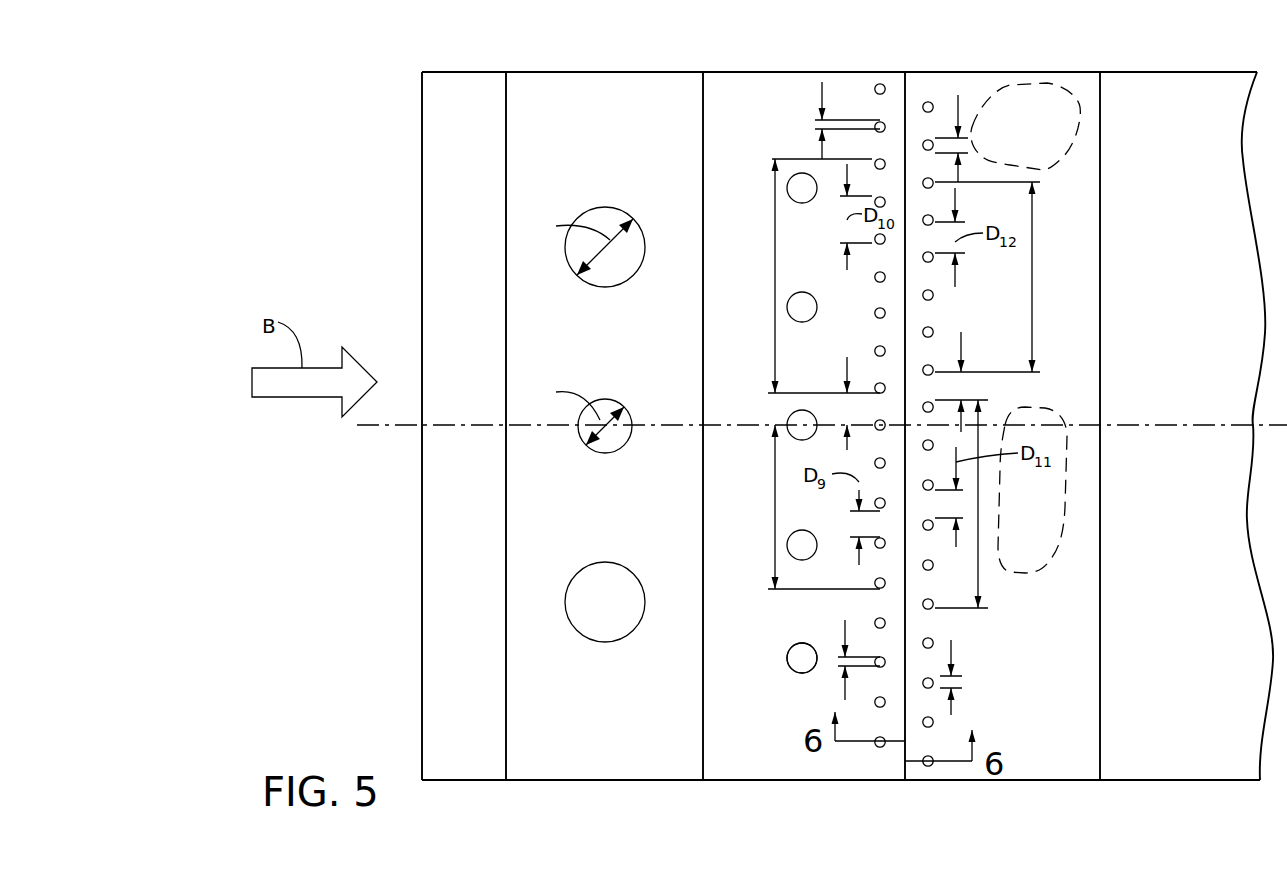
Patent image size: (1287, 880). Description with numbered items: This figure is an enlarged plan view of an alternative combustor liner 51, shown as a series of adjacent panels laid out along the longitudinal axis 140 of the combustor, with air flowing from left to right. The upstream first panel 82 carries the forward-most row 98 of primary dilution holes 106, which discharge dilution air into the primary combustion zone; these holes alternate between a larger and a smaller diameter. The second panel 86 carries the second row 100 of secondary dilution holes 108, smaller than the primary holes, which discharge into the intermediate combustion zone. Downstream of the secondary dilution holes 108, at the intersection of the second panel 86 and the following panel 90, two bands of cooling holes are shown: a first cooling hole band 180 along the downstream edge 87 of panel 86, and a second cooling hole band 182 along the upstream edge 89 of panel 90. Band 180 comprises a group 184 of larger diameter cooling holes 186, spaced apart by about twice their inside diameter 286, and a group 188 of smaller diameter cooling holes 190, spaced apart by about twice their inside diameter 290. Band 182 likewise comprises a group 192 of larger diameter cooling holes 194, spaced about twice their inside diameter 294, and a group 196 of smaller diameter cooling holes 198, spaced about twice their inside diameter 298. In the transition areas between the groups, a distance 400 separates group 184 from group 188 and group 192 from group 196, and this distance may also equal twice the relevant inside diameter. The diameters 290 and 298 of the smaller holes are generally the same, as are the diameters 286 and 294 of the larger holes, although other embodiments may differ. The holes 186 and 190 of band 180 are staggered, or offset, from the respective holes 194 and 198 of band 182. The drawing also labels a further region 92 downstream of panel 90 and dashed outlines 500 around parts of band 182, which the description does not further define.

The combustor liner 51 is at (372, 68).
The forward-most row 98 is at (538, 94).
The second row 100 is at (726, 129).
The downstream chamber 92 is at (1211, 426).
The first panel 82 is at (581, 780).
The second panel 86 is at (775, 780).
The panel 90 is at (985, 780).
The primary dilution holes 106 is at (633, 630).
The secondary dilution holes 108 is at (791, 672).
The longitudinal axis 140 is at (1128, 425).
The first cooling hole band 180 is at (830, 72).
The second cooling hole band 182 is at (940, 88).
The group of larger diameter cooling holes 184 is at (775, 505).
The larger diameter cooling holes 186 is at (883, 127).
The group of smaller diameter cooling holes 188 is at (775, 275).
The smaller diameter cooling holes 190 is at (875, 312).
The group of larger diameter cooling holes 192 is at (978, 548).
The larger diameter cooling holes 194 is at (934, 104).
The group of smaller diameter cooling holes 196 is at (1032, 282).
The smaller diameter cooling holes 198 is at (933, 332).
The inside diameter 286 is at (822, 92).
The inside diameter 290 is at (845, 628).
The inside diameter 294 is at (962, 100).
The inside diameter 298 is at (951, 644).
The distance 400 is at (847, 357).
The aperture cluster region 500 is at (1025, 328).
The downstream edge 87 is at (905, 90).
The upstream edge 89 is at (905, 90).